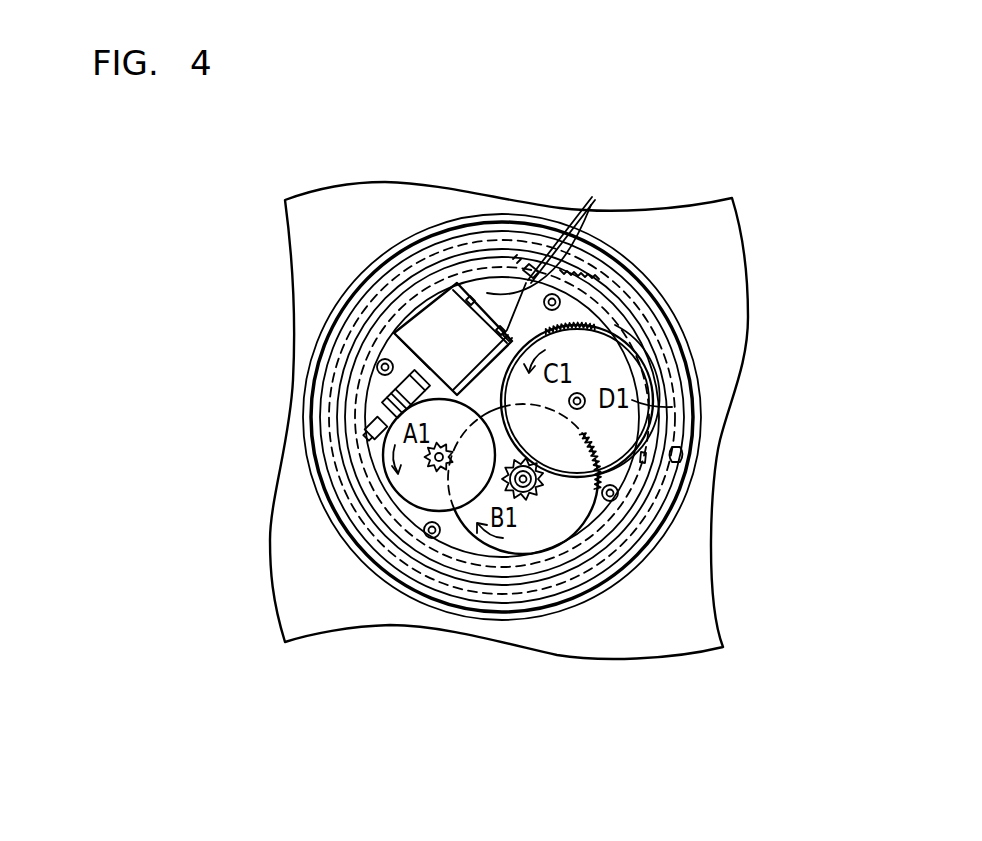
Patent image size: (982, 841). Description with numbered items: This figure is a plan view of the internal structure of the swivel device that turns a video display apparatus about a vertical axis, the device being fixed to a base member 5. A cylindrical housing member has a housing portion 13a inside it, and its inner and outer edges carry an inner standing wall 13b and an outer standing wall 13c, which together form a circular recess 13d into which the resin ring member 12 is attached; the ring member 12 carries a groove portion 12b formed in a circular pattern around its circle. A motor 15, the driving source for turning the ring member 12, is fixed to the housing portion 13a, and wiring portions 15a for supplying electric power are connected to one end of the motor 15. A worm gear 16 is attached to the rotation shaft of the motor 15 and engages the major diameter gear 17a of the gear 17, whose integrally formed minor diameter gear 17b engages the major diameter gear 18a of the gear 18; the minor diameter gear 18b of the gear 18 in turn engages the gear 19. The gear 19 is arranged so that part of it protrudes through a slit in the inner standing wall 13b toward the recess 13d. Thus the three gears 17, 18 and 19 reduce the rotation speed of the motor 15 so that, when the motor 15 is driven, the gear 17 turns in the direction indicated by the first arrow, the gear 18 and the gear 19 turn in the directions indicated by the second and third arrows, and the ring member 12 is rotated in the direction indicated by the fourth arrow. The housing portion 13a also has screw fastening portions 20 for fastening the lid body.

The base member 5 is at (742, 225).
The ring member 12 is at (655, 300).
The groove portion 12b is at (703, 456).
The housing portion 13a is at (490, 287).
The inner standing wall 13b is at (575, 540).
The outer standing wall 13c is at (697, 483).
The circular recess 13d is at (630, 525).
The motor 15 is at (457, 337).
The wiring portions 15a is at (592, 200).
The worm gear 16 is at (368, 426).
The gear 17 is at (306, 504).
The major diameter gear 17a is at (407, 500).
The minor diameter gear 17b is at (440, 467).
The gear 18 is at (524, 589).
The major diameter gear 18a is at (516, 498).
The minor diameter gear 18b is at (540, 500).
The gear 19 is at (627, 363).
The screw fastening portions 20 is at (558, 296).